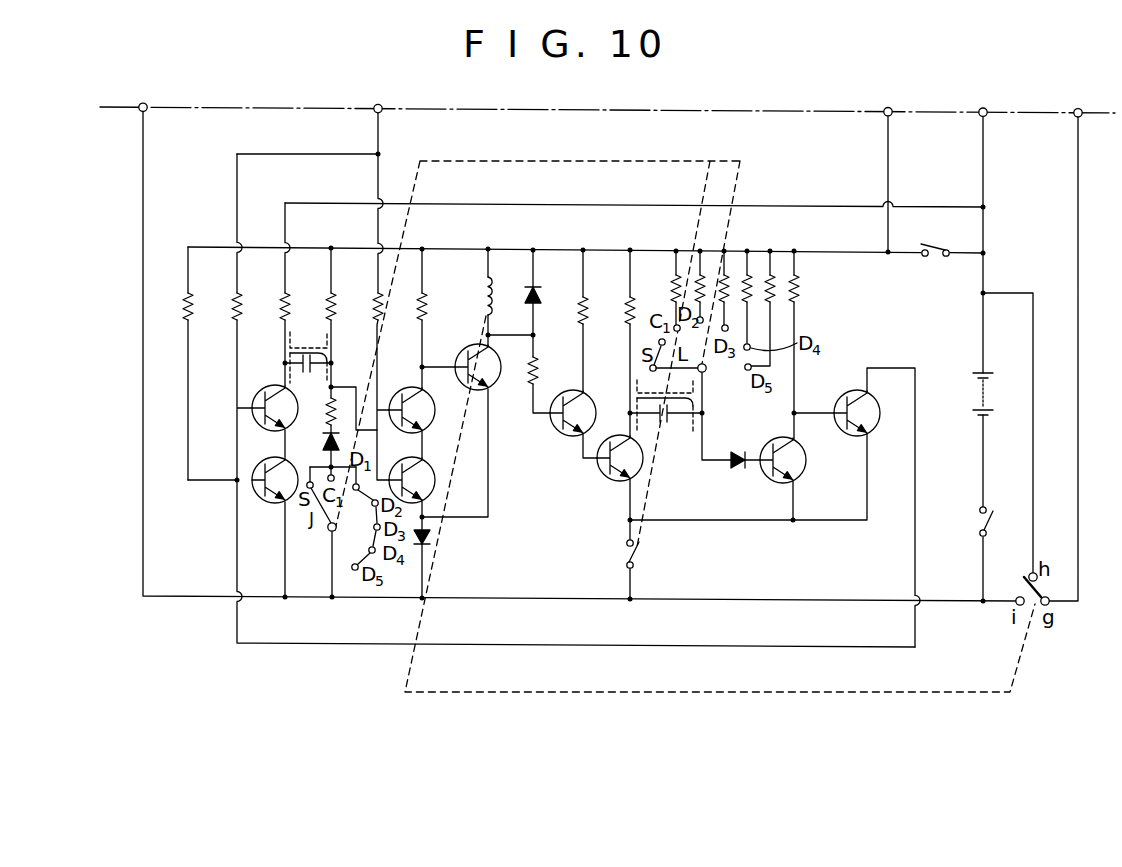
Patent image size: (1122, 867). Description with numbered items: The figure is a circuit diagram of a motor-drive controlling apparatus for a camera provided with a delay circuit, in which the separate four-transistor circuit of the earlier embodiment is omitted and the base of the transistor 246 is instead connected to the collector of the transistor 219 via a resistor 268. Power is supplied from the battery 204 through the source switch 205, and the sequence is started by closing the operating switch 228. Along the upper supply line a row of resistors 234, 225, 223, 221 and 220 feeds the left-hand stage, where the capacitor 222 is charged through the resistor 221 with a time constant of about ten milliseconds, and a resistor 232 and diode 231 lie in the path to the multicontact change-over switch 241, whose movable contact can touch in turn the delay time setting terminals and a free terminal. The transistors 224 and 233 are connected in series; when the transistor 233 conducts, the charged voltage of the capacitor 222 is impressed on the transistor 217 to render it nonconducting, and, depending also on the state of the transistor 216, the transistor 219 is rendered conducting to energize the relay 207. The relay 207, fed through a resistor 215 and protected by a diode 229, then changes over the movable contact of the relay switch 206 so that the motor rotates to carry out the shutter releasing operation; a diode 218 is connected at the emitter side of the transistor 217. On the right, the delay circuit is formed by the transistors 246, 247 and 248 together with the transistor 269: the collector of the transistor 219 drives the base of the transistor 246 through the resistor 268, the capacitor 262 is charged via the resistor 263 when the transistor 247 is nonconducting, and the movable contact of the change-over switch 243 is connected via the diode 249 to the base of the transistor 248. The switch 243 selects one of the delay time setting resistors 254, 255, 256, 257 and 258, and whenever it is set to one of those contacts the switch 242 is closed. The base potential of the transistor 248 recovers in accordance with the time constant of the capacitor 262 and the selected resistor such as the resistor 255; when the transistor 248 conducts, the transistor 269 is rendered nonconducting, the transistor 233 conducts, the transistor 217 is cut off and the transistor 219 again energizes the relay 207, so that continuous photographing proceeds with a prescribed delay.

The battery 204 is at (986, 395).
The source switch 205 is at (976, 527).
The relay switch 206 is at (1034, 599).
The relay 207 is at (486, 289).
The resistor 215 is at (425, 308).
The transistor 216 is at (438, 412).
The transistor 217 is at (437, 483).
The diode 218 is at (432, 536).
The transistor 219 is at (499, 381).
The resistor 220 is at (374, 308).
The resistor 221 is at (328, 308).
The capacitor 222 is at (286, 357).
The resistor 223 is at (280, 308).
The transistor 224 is at (255, 426).
The resistor 225 is at (233, 307).
The operating switch 228 is at (931, 258).
The diode 229 is at (539, 287).
The diode 231 is at (322, 438).
The resistor 232 is at (337, 394).
The transistor 233 is at (254, 499).
The resistor 234 is at (186, 307).
The multicontact change-over switch 241 is at (313, 532).
The multicontact change-over switch 242 is at (635, 553).
The multicontact change-over switch 243 is at (708, 372).
The transistor 246 is at (548, 430).
The transistor 247 is at (601, 484).
The transistor 248 is at (808, 475).
The diode 249 is at (740, 470).
The resistor 254 is at (673, 287).
The resistor 255 is at (698, 276).
The resistor 256 is at (722, 276).
The resistor 257 is at (746, 275).
The resistor 258 is at (777, 275).
The capacitor 262 is at (666, 417).
The resistor 263 is at (626, 308).
The resistor 268 is at (547, 356).
The transistor 269 is at (880, 432).